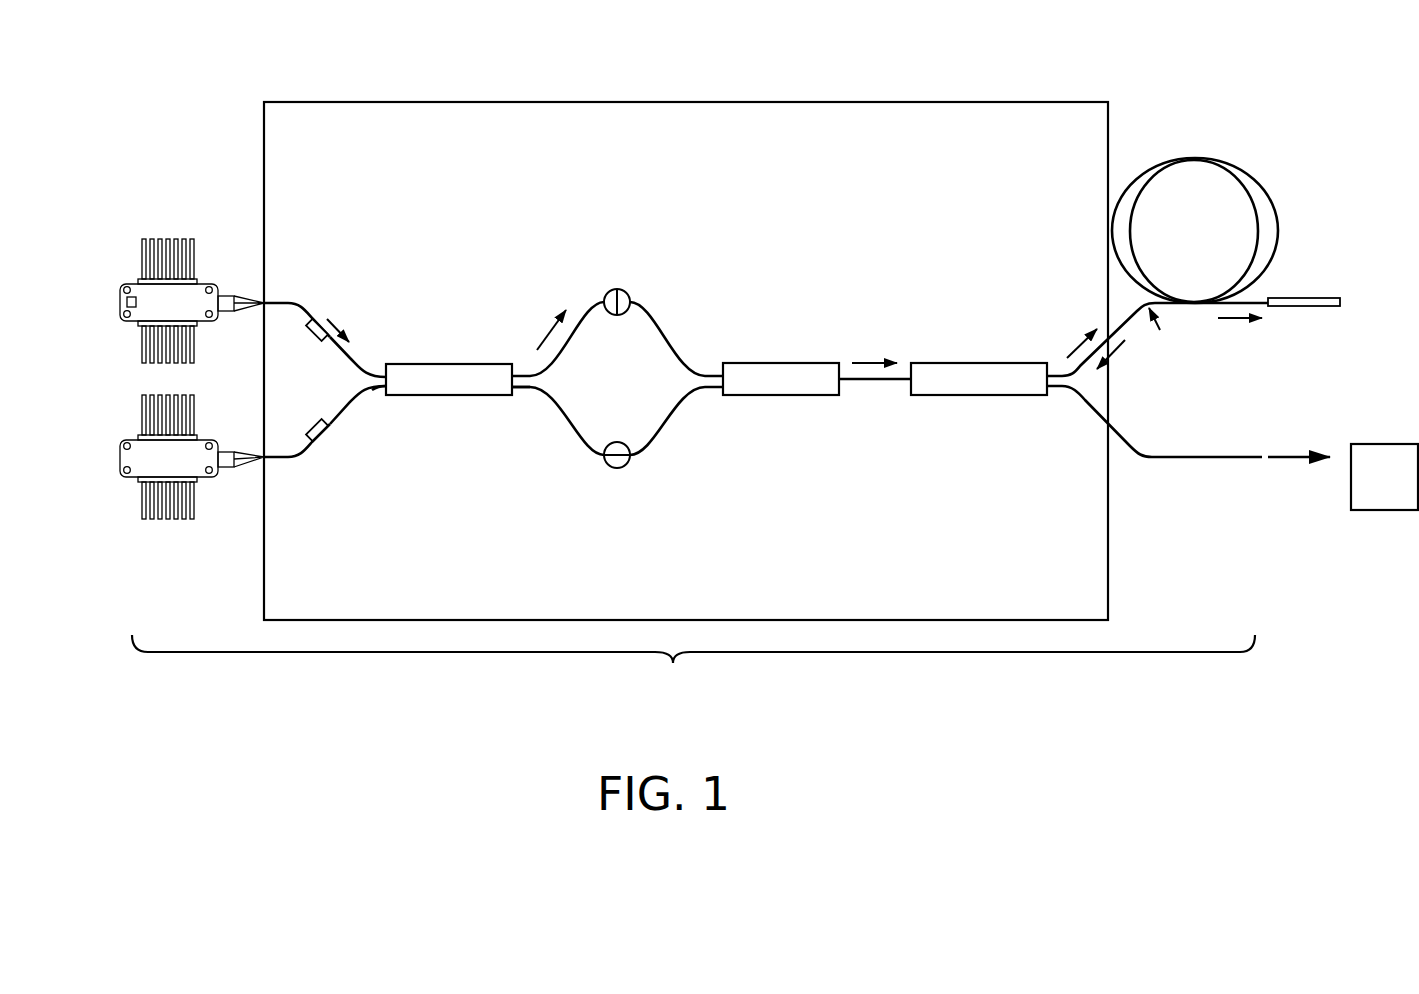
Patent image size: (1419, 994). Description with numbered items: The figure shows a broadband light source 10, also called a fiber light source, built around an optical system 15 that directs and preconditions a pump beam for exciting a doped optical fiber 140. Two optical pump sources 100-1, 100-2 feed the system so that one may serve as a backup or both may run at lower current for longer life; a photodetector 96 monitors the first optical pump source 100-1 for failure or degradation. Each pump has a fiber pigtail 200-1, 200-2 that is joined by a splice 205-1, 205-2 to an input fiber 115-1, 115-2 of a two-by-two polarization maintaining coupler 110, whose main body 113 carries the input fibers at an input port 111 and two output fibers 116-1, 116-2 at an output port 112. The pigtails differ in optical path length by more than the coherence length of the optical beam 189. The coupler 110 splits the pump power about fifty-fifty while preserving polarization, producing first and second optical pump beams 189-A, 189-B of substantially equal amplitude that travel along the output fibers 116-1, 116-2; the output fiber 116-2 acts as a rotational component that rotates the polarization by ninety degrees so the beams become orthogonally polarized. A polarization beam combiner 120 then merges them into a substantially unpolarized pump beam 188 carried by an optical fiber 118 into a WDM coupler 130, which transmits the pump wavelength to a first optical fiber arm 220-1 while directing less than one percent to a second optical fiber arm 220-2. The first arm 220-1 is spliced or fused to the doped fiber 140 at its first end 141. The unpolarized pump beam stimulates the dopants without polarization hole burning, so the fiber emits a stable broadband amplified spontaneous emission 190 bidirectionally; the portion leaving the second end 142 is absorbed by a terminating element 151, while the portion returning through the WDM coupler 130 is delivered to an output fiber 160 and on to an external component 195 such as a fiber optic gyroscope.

The broadband light source 10 is at (693, 665).
The optical system 15 is at (686, 333).
The photodetector 96 is at (108, 332).
The optical pump source 100-1 is at (167, 303).
The optical pump source 100-2 is at (167, 457).
The 2x2 polarization maintaining coupler 110 is at (449, 357).
The input port 111 is at (393, 424).
The output port 112 is at (531, 418).
The main body 113 is at (442, 419).
The input fiber 115-1 is at (381, 344).
The input fiber 115-2 is at (358, 443).
The output fiber 116-1 is at (599, 337).
The output fiber 116-2 is at (636, 424).
The optical fiber 118 is at (875, 401).
The polarization beam combiner 120 is at (781, 401).
The WDM coupler 130 is at (979, 402).
The doped optical fiber 140 is at (1216, 217).
The first end 141 is at (1182, 335).
The second end 142 is at (1249, 270).
The terminating element 151 is at (1325, 282).
The output fiber 160 is at (1207, 486).
The unpolarized pump beam 188 is at (960, 330).
The optical beam 189 is at (343, 312).
The first optical pump beam 189-A is at (610, 329).
The second optical pump beam 189-B is at (617, 447).
The broadband amplified spontaneous emission 190 is at (1221, 387).
The external component 195 is at (1372, 498).
The fiber pigtail 200-1 is at (297, 287).
The fiber pigtail 200-2 is at (297, 471).
The splice 205-1 is at (307, 347).
The splice 205-2 is at (300, 411).
The first optical fiber arm 220-1 is at (1093, 313).
The second optical fiber arm 220-2 is at (1139, 421).